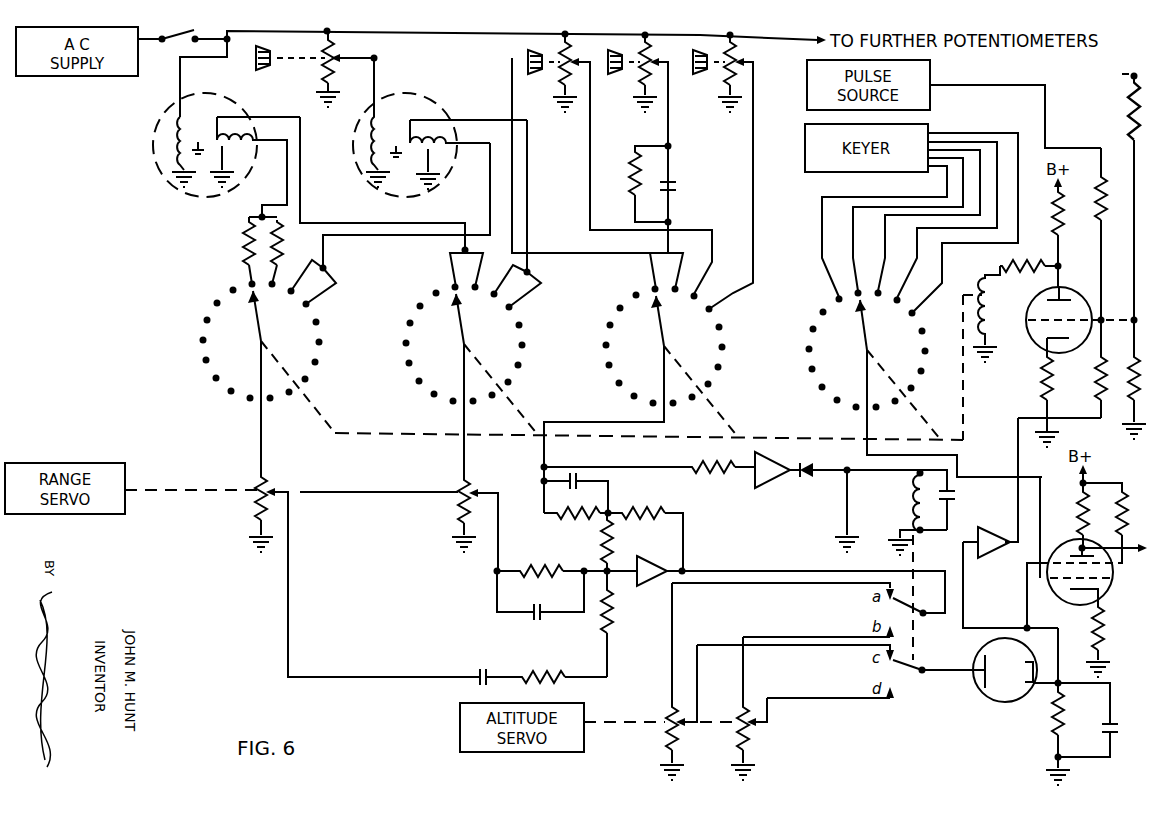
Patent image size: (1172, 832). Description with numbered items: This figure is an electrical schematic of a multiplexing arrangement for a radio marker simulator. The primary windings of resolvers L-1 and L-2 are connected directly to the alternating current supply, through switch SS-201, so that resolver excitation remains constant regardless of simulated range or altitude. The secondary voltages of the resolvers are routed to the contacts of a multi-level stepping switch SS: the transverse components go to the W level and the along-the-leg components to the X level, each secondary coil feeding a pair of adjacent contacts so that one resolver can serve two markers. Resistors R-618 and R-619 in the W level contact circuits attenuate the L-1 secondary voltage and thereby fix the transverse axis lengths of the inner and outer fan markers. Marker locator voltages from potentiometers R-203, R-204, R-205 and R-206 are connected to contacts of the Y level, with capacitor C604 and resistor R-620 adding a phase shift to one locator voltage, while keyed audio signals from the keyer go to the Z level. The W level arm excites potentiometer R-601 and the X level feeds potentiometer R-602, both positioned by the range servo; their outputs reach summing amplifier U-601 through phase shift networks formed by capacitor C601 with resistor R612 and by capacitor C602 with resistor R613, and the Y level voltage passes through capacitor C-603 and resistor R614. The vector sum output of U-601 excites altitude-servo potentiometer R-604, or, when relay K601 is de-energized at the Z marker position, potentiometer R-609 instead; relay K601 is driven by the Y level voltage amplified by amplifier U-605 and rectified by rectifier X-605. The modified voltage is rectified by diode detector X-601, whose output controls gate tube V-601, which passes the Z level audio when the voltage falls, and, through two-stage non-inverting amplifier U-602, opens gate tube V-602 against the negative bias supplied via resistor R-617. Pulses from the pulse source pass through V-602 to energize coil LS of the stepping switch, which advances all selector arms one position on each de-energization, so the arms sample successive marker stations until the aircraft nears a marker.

The AC supply switch SS-201 is at (195, 28).
The marker locator potentiometer R-203 is at (315, 69).
The resolver L-1 is at (170, 127).
The resolver L-2 is at (432, 108).
The potentiometer R-205 is at (620, 164).
The potentiometer R-204 is at (651, 144).
The potentiometer R-206 is at (736, 172).
The resistor R-620 is at (628, 172).
The capacitor C604 is at (690, 182).
The resistor R-617 is at (1131, 122).
The stepping switch coil LS is at (1008, 350).
The gate tube V-602 is at (1040, 347).
The control gate tube V-601 is at (1089, 598).
The two-stage non-inverting amplifier U-602 is at (1000, 525).
The amplifier U-605 is at (678, 466).
The rectifier X-605 is at (829, 478).
The relay K601 is at (911, 494).
The multi-level stepping switch SS is at (762, 439).
The W level W is at (268, 357).
The X level X is at (471, 360).
The Y level Y is at (640, 400).
The Z level Z is at (924, 384).
The resistor R-618 is at (244, 262).
The resistor R-619 is at (312, 260).
The potentiometer R-601 is at (220, 447).
The potentiometer R-602 is at (484, 448).
The capacitor C-603 is at (592, 466).
The resistor R614 is at (606, 516).
The resistor R613 is at (565, 566).
The summing amplifier U-601 is at (668, 563).
The capacitor C602 is at (562, 608).
The capacitor C601 is at (498, 674).
The resistor R612 is at (565, 674).
The potentiometer R-609 is at (667, 723).
The potentiometer R-604 is at (746, 738).
The diode detector X-601 is at (975, 662).